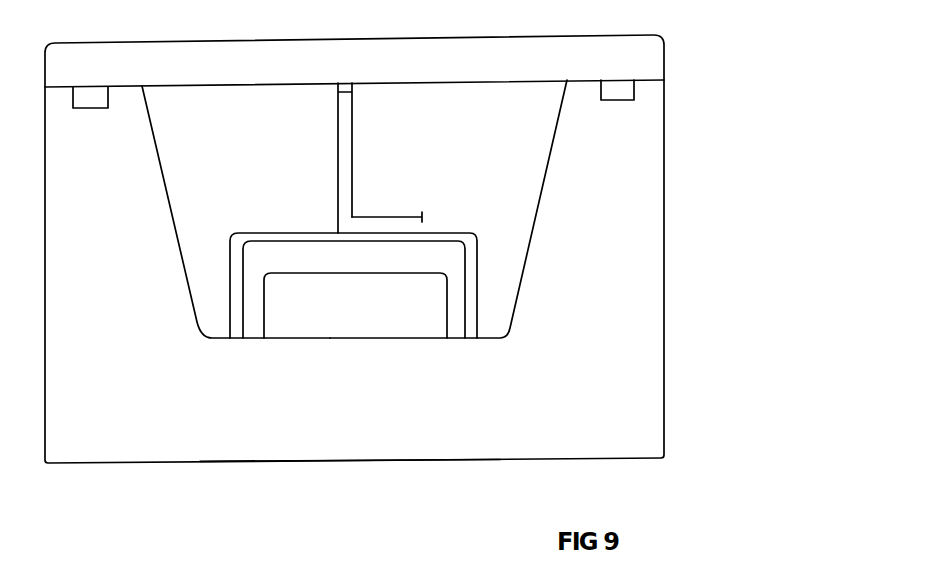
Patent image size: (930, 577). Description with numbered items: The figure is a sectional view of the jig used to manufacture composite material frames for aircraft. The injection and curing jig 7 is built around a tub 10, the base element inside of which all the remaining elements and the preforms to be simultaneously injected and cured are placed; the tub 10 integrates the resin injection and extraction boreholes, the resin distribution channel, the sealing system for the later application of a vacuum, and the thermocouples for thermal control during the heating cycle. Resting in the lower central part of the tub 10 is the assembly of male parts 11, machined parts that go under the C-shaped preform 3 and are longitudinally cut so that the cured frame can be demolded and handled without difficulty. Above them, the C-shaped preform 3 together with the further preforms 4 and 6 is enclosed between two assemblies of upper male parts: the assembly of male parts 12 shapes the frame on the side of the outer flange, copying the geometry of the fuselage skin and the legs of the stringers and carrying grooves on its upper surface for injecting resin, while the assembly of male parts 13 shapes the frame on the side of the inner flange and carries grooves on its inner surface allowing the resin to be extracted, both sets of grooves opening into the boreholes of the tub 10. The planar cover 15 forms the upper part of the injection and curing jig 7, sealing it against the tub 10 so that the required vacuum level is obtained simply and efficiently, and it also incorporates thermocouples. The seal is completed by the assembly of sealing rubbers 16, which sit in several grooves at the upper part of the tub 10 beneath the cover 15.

The C-shaped preform 3 is at (238, 280).
The preform 4 is at (400, 222).
The preform 6 is at (338, 232).
The injection and curing jig 7 is at (347, 485).
The tub 10 is at (222, 432).
The assembly of male parts 11 is at (298, 260).
The assembly of male parts 12 is at (236, 212).
The assembly of male parts 13 is at (448, 209).
The cover 15 is at (165, 72).
The assembly of sealing rubbers 16 is at (90, 98).